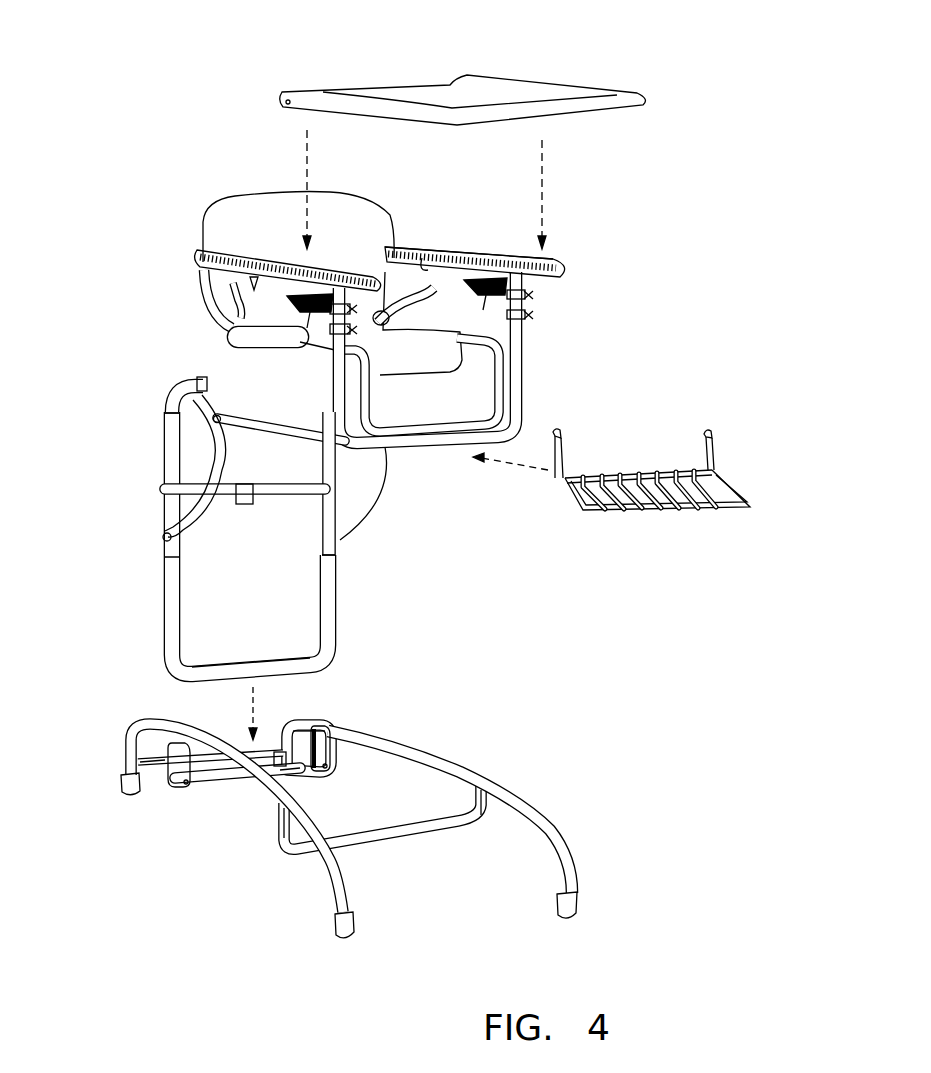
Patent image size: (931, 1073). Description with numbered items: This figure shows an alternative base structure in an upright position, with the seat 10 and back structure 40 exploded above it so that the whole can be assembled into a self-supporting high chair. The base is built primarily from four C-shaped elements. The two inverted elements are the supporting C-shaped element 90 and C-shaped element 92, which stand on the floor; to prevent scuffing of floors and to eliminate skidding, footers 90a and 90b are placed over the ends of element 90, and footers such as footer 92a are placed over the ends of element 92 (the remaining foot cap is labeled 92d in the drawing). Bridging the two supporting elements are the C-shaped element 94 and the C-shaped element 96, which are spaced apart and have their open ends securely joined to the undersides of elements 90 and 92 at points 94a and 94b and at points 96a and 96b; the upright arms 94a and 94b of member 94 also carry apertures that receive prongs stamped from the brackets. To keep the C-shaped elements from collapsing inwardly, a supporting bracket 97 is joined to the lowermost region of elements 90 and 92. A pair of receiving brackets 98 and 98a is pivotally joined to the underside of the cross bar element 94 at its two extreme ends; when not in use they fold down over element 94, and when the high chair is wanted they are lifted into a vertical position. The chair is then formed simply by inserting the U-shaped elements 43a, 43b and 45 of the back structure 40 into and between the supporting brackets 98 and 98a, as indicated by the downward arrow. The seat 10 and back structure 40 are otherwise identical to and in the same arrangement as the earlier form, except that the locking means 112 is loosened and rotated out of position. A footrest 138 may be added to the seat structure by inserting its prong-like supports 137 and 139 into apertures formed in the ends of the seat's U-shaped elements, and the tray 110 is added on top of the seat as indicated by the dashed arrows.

The seat 10 is at (446, 411).
The back structure 40 is at (267, 526).
The U-shaped element 43a is at (172, 627).
The U-shaped element 43b is at (333, 628).
The U-shaped element 45 is at (217, 675).
The C-shaped element 90 is at (290, 800).
The footer 90a is at (118, 792).
The footer 90b is at (336, 930).
The C-shaped element 92 is at (458, 762).
The footer 92a is at (293, 760).
The rear tube foot 92d is at (573, 903).
The C-shaped element 94 is at (220, 780).
The upright arm 94a is at (340, 750).
The upright arm 94b is at (171, 745).
The C-shaped element 96 is at (412, 833).
The joining point 96a is at (522, 800).
The joining point 96b is at (290, 803).
The supporting bracket 97 is at (250, 757).
The receiving bracket 98 is at (183, 762).
The receiving bracket 98a is at (326, 738).
The tray 110 is at (545, 92).
The locking means 112 is at (520, 305).
The prong-like support 137 is at (713, 440).
The footrest 138 is at (630, 482).
The prong-like support 139 is at (563, 442).